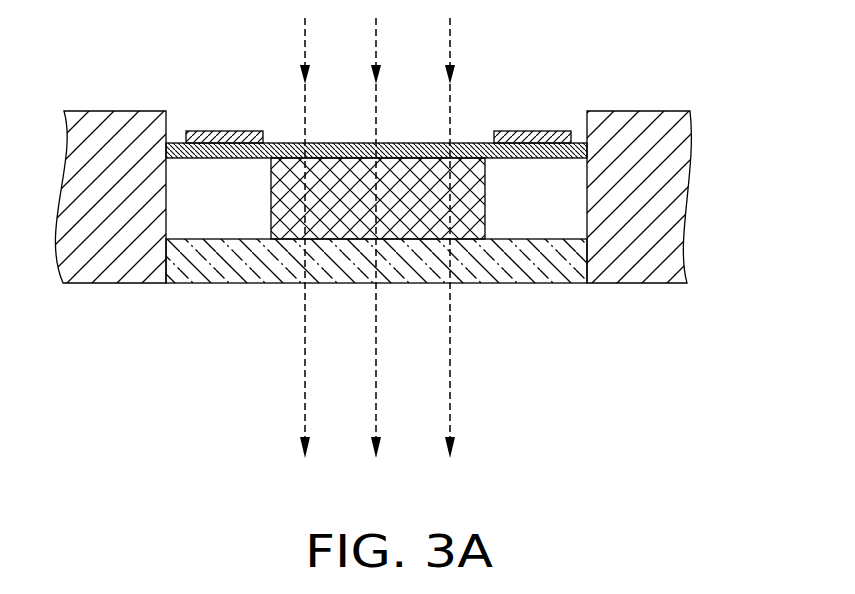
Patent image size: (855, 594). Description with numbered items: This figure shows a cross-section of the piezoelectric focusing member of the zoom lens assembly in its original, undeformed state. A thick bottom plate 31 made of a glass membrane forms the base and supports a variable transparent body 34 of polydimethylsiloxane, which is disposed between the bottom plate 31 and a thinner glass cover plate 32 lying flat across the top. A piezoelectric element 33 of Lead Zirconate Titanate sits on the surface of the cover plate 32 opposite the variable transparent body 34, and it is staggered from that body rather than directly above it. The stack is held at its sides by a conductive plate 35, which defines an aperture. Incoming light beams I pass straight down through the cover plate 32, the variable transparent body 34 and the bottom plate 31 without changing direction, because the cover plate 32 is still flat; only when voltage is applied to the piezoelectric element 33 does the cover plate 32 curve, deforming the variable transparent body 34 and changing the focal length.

The bottom plate 31 is at (552, 270).
The cover plate 32 is at (464, 145).
The piezoelectric element 33 is at (558, 131).
The variable transparent body 34 is at (480, 207).
The conductive plate 35 is at (682, 152).
The light beams I is at (451, 40).